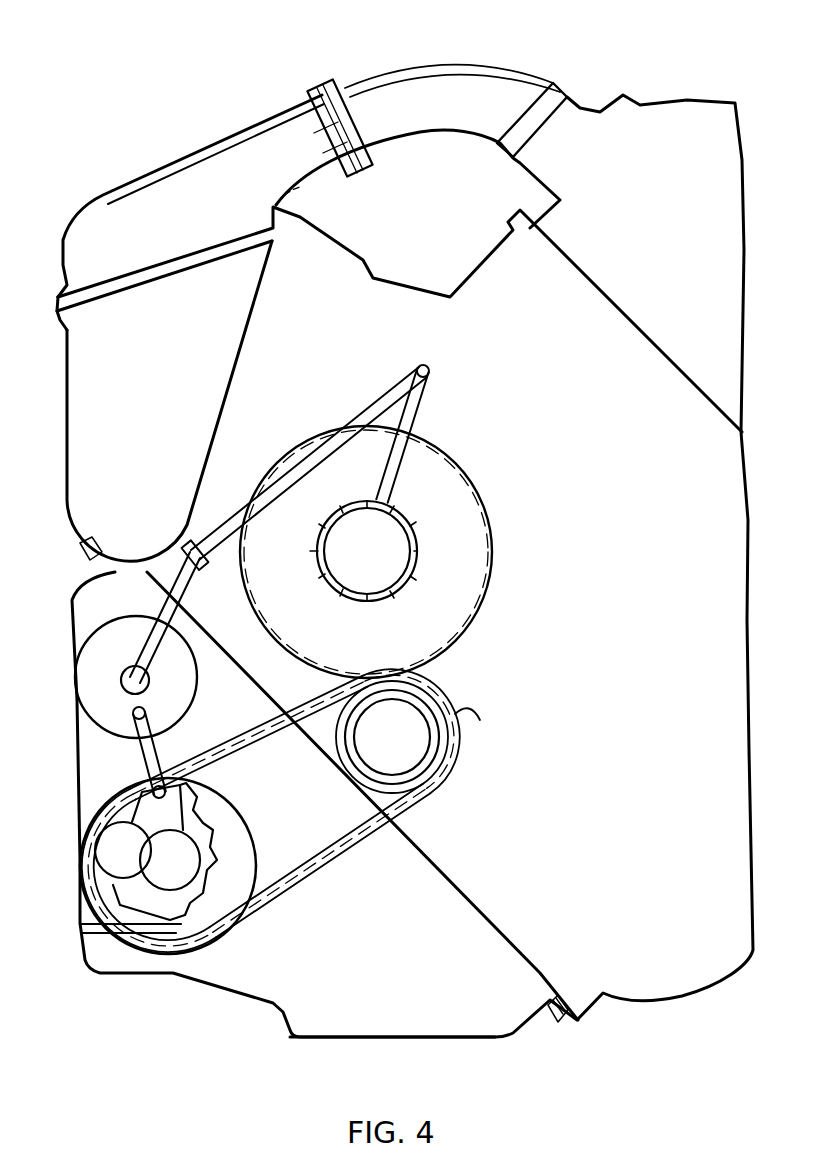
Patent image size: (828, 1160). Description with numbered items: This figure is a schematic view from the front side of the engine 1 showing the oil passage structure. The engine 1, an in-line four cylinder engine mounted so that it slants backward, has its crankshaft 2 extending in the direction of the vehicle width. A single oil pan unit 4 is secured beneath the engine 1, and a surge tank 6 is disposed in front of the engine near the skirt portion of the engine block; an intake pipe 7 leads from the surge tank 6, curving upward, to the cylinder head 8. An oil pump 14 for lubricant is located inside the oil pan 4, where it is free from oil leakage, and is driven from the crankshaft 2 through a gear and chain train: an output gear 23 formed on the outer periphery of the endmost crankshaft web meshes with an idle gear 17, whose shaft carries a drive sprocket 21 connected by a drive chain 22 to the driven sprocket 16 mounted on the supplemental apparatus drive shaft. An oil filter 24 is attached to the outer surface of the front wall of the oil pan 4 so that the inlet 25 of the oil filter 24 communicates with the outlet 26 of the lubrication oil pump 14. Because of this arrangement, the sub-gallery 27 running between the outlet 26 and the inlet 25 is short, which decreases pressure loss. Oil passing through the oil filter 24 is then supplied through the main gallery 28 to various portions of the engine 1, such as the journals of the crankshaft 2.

The engine 1 is at (176, 148).
The crankshaft 2 is at (318, 549).
The oil pan unit 4 is at (212, 995).
The surge tank 6 is at (85, 388).
The intake pipe 7 is at (470, 87).
The cylinder head 8 is at (636, 128).
The oil pump for lubricant 14 is at (112, 883).
The sprocket 16 is at (258, 858).
The idle gear 17 is at (480, 720).
The drive sprocket 21 is at (352, 800).
The drive chain 22 is at (282, 893).
The output gear 23 is at (492, 583).
The oil filter 24 is at (95, 663).
The inlet of the oil filter 25 is at (125, 717).
The outlet of the lubrication oil pump 26 is at (153, 798).
The sub-gallery 27 is at (140, 752).
The main gallery 28 is at (148, 578).